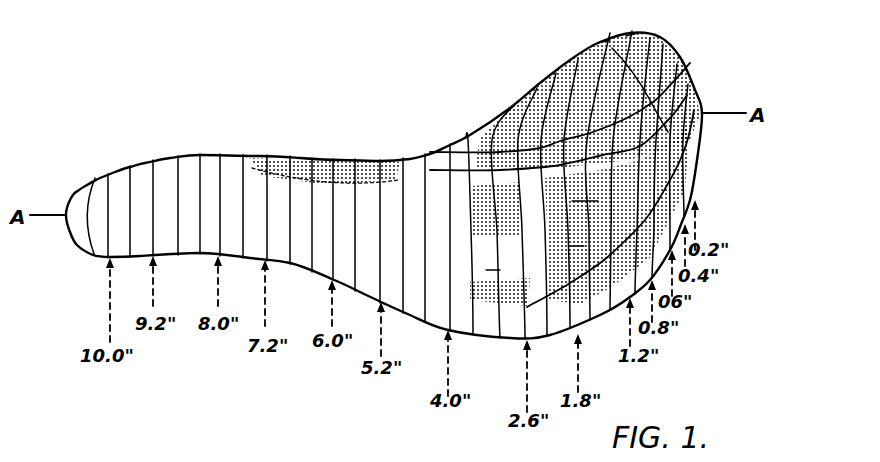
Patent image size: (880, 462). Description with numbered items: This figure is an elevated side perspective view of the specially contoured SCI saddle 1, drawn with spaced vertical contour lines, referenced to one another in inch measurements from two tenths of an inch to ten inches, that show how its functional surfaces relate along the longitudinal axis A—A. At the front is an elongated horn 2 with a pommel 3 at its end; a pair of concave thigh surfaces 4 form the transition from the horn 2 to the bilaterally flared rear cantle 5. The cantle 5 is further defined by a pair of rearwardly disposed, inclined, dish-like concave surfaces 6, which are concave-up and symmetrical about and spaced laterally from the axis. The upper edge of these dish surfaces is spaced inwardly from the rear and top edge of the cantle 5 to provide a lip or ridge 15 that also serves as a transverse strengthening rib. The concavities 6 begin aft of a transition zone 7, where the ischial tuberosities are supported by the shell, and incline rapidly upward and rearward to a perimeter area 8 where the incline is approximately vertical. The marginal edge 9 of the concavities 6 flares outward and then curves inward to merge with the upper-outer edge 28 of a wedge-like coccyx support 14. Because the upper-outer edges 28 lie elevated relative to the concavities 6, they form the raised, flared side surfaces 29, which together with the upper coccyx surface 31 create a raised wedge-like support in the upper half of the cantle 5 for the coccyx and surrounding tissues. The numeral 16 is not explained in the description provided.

The SCI saddle 1 is at (400, 142).
The elongated horn 2 is at (209, 143).
The pommel 3 is at (74, 204).
The concave thigh surfaces 4 is at (362, 295).
The bilaterally flared rear cantle 5 is at (590, 322).
The concave surfaces 6 is at (530, 82).
The transition zone 7 is at (470, 127).
The perimeter area 8 is at (605, 42).
The marginal edge 9 is at (632, 36).
The coccyx support 14 is at (687, 95).
The lip or ridge 15 is at (690, 63).
The nose depression 16 is at (331, 168).
The upper-outer edge 28 is at (609, 90).
The side surfaces 29 is at (587, 190).
The upper coccyx surface 31 is at (686, 164).